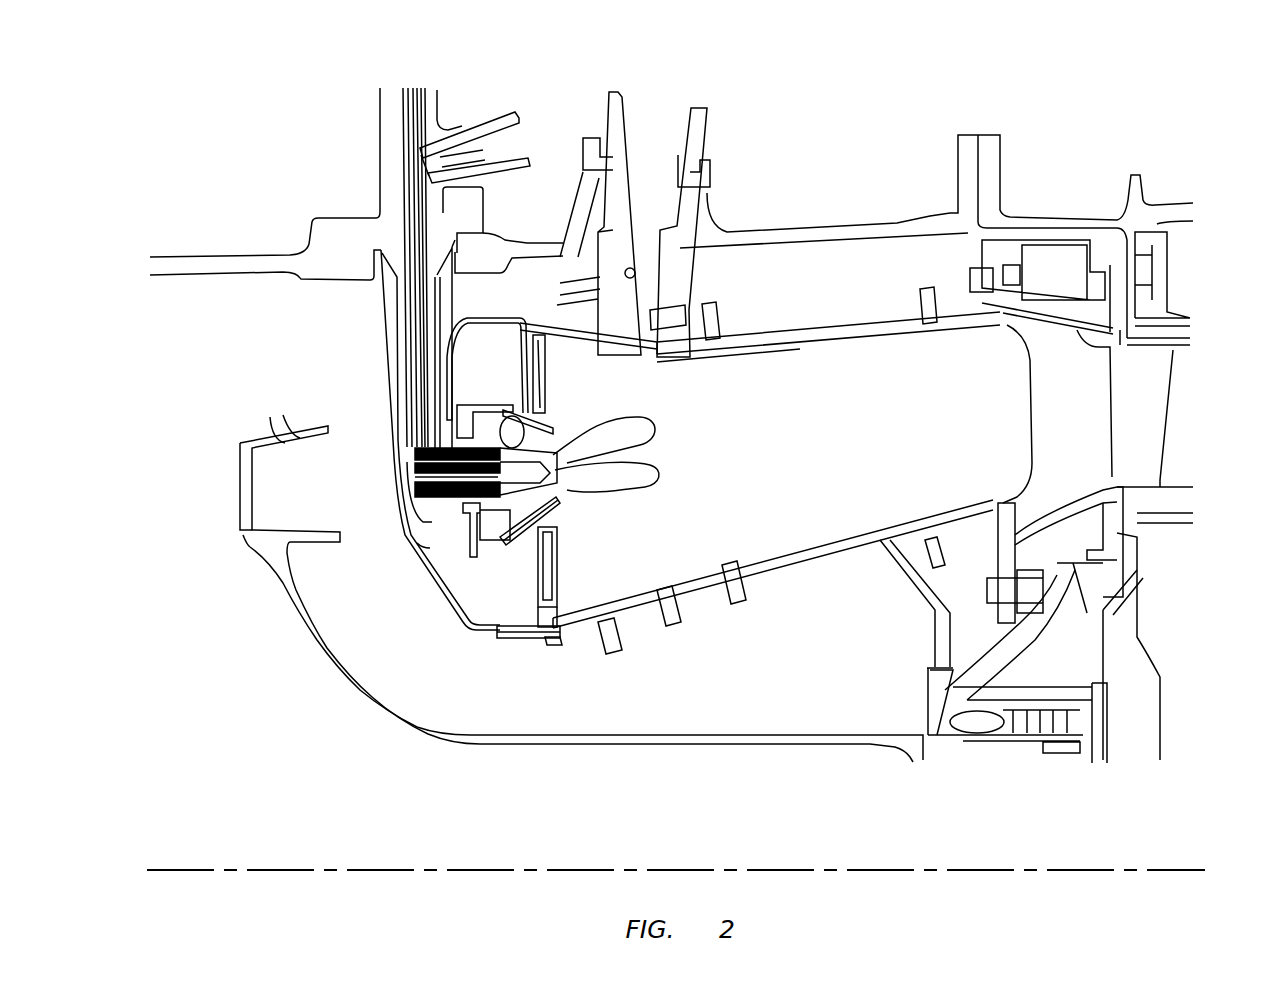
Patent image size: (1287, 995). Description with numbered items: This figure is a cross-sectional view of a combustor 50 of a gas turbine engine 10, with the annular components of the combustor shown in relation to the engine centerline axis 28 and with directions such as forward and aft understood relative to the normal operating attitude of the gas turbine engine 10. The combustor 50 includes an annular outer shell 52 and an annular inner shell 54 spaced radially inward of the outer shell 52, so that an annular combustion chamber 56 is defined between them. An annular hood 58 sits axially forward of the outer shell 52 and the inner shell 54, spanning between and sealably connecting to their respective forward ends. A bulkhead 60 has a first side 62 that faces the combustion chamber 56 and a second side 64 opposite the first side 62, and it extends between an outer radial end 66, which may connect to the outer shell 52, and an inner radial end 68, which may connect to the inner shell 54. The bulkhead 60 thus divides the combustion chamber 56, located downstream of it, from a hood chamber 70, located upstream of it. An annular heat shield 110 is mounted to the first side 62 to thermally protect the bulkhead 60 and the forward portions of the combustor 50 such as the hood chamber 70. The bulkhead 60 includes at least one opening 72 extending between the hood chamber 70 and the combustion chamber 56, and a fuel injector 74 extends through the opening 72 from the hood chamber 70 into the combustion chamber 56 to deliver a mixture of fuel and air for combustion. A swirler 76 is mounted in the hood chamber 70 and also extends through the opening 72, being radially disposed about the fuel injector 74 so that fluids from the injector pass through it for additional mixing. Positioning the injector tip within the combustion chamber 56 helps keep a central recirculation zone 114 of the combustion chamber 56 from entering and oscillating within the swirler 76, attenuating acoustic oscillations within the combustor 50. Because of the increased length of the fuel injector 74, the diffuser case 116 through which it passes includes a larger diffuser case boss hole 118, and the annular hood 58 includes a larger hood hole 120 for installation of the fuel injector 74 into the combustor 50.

The gas turbine engine 10 is at (1077, 128).
The engine centerline axis 28 is at (1193, 866).
The combustor 50 is at (833, 434).
The annular outer shell 52 is at (848, 325).
The annular inner shell 54 is at (848, 540).
The annular combustion chamber 56 is at (967, 414).
The annular hood 58 is at (397, 530).
The bulkhead 60 is at (534, 580).
The first side 62 is at (545, 372).
The second side 64 is at (560, 587).
The outer radial end 66 is at (538, 317).
The inner radial end 68 is at (556, 637).
The hood chamber 70 is at (481, 546).
The opening 72 is at (480, 628).
The fuel injector 74 is at (572, 491).
The swirler 76 is at (503, 440).
The annular heat shield 110 is at (545, 350).
The central recirculation zone 114 is at (665, 455).
The diffuser case 116 is at (527, 242).
The diffuser case boss hole 118 is at (470, 250).
The hood hole 120 is at (383, 390).